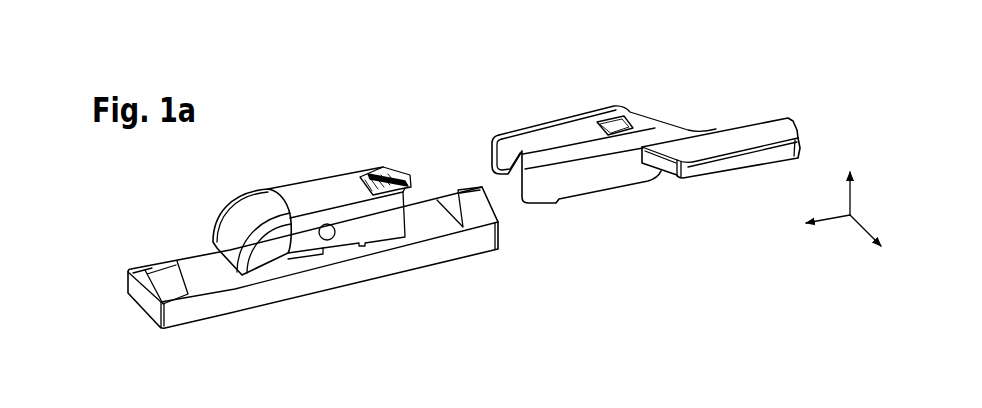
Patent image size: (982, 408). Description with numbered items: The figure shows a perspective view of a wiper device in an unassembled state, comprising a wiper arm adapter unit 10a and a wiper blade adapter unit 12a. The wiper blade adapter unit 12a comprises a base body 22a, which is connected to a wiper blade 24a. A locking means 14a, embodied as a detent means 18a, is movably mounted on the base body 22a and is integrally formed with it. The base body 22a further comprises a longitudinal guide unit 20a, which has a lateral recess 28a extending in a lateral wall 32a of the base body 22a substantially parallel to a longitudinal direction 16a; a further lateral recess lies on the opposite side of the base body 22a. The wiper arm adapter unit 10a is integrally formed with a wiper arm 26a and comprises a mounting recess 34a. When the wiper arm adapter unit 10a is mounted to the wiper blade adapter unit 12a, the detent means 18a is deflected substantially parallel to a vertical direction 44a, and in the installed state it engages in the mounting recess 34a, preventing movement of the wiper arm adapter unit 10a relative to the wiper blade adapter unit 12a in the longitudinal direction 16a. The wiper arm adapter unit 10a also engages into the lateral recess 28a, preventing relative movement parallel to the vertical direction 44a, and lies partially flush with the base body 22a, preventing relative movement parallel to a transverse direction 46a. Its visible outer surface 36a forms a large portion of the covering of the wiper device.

The wiper arm adapter unit 10a is at (572, 111).
The wiper blade adapter unit 12a is at (186, 214).
The locking means 14a is at (366, 158).
The longitudinal direction 16a is at (827, 218).
The detent means 18a is at (390, 176).
The longitudinal guide unit 20a is at (429, 271).
The base body 22a is at (295, 193).
The wiper blade 24a is at (146, 299).
The wiper arm 26a is at (763, 130).
The lateral recess 28a is at (337, 253).
The lateral wall 32a is at (371, 236).
The mounting recess 34a is at (641, 104).
The visible outer surface 36a is at (535, 137).
The vertical direction 44a is at (852, 188).
The transverse direction 46a is at (866, 229).